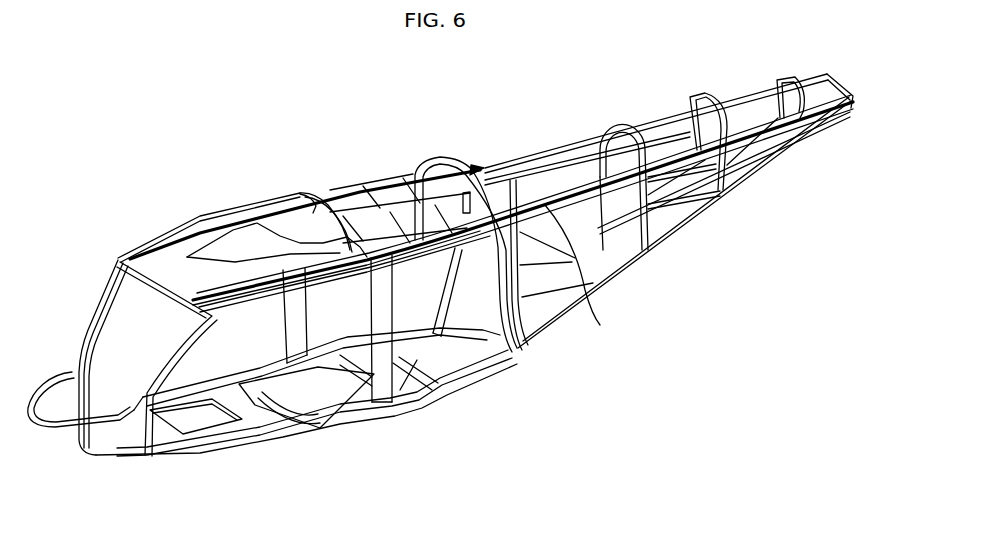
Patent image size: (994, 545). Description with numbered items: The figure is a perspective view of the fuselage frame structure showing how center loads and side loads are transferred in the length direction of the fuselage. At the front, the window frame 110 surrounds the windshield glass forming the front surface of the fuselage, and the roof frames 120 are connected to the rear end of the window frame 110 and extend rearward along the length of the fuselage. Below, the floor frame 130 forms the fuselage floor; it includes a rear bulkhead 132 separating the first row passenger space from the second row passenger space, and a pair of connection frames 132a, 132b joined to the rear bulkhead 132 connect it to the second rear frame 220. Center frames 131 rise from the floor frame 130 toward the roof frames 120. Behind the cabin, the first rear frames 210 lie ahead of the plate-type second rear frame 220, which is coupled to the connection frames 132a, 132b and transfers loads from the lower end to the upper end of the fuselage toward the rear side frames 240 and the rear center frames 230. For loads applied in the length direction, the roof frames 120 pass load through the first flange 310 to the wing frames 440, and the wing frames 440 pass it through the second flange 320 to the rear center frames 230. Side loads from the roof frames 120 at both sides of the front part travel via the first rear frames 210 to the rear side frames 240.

The window frame 110 is at (85, 325).
The roof frames 120 is at (273, 245).
The floor frame 130 is at (283, 437).
The center frames 131 is at (306, 333).
The rear bulkhead 132 is at (361, 372).
The connection frame 132a is at (470, 380).
The connection frame 132b is at (413, 382).
The first rear frames 210 is at (517, 360).
The second rear frame 220 is at (532, 325).
The rear center frames 230 is at (498, 168).
The rear side frames 240 is at (577, 266).
The first flange 310 is at (312, 205).
The second flange 320 is at (440, 158).
The wing frames 440 is at (377, 218).